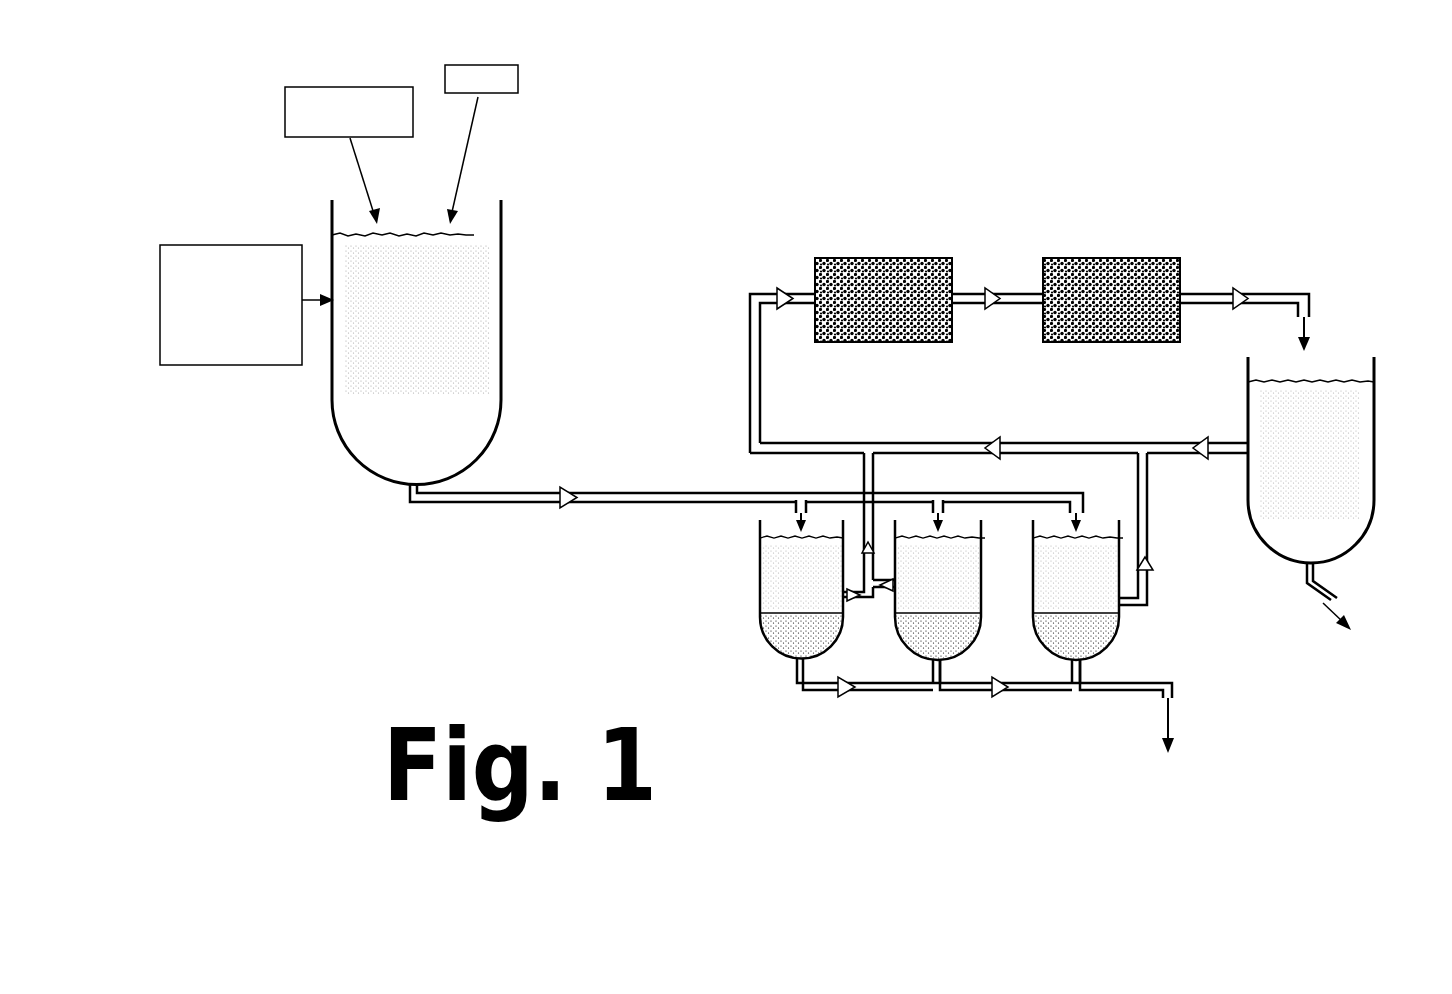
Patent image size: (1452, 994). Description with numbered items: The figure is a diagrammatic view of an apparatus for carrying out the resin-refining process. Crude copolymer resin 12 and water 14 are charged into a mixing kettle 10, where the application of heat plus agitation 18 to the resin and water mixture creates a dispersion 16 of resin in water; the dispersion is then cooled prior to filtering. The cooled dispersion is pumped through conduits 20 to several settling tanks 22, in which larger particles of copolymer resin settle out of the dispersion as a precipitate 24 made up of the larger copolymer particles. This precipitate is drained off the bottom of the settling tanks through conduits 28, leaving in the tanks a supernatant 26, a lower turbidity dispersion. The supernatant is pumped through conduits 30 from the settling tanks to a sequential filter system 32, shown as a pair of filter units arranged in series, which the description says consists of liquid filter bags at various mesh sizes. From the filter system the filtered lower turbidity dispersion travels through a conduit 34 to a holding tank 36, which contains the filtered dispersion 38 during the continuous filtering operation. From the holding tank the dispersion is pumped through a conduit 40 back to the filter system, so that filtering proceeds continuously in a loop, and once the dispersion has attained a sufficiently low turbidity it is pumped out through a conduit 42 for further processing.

The mixing kettle 10 is at (367, 473).
The crude copolymer resin 12 is at (277, 118).
The water 14 is at (563, 85).
The dispersion 16 is at (417, 288).
The application of heat plus agitation 18 is at (149, 312).
The conduits 20 is at (627, 490).
The settling tanks 22 is at (1033, 630).
The precipitate 24 is at (798, 585).
The supernatant 26 is at (937, 585).
The conduits 28 is at (1128, 693).
The conduits 30 is at (1137, 500).
The sequential filter system 32 is at (1063, 258).
The conduit 34 is at (1274, 288).
The holding tank 36 is at (1364, 532).
The filtered dispersion 38 is at (1316, 442).
The conduit 40 is at (1178, 443).
The conduit 42 is at (1320, 644).